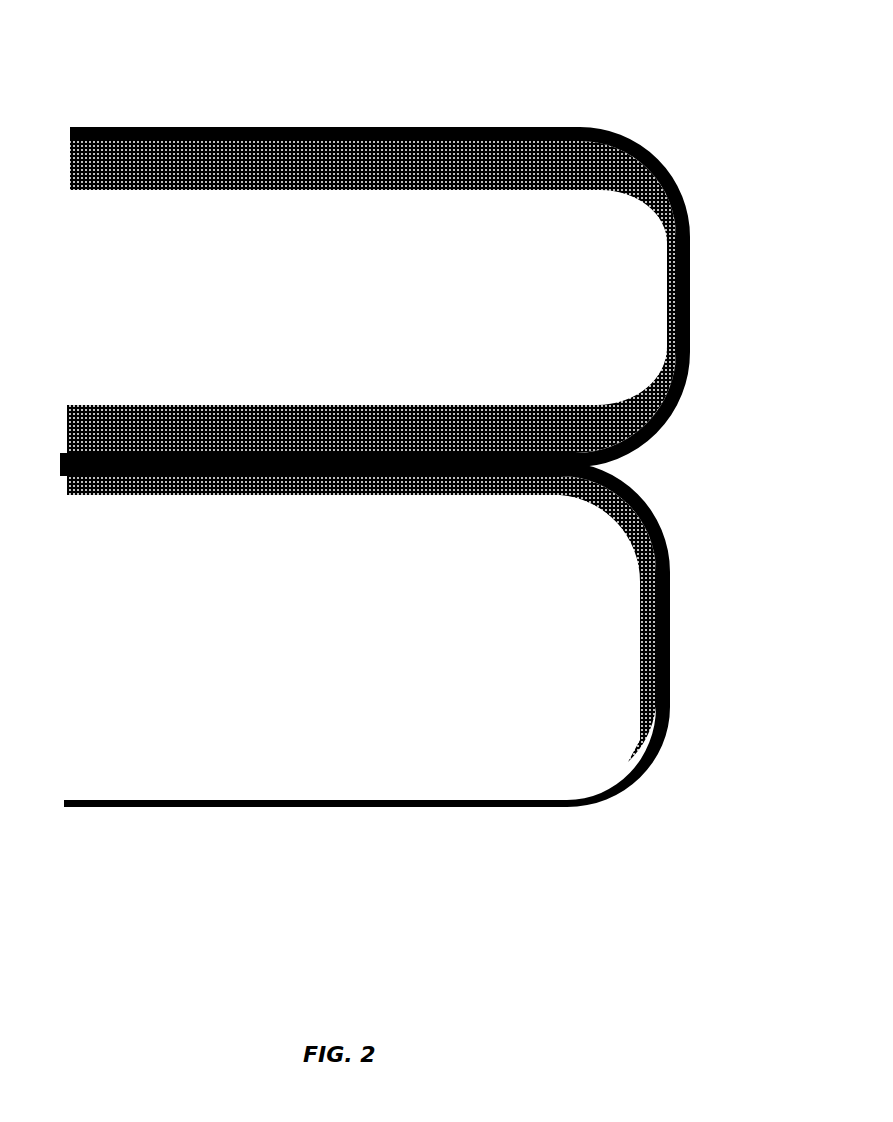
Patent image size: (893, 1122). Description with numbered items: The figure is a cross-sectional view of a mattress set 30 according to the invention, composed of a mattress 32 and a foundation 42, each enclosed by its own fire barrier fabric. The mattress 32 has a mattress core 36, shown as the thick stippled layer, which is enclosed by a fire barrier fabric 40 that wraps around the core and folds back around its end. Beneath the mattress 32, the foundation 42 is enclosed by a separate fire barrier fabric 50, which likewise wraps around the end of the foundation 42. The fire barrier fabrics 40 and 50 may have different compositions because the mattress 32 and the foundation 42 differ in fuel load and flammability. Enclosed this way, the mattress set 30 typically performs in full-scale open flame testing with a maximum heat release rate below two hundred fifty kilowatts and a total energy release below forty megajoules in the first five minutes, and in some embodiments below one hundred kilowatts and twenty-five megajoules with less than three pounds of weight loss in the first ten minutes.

The mattress set 30 is at (404, 381).
The mattress 32 is at (270, 125).
The mattress core 36 is at (348, 243).
The fire barrier fabric 40 is at (672, 185).
The foundation 42 is at (304, 811).
The fire barrier fabric 50 is at (693, 610).